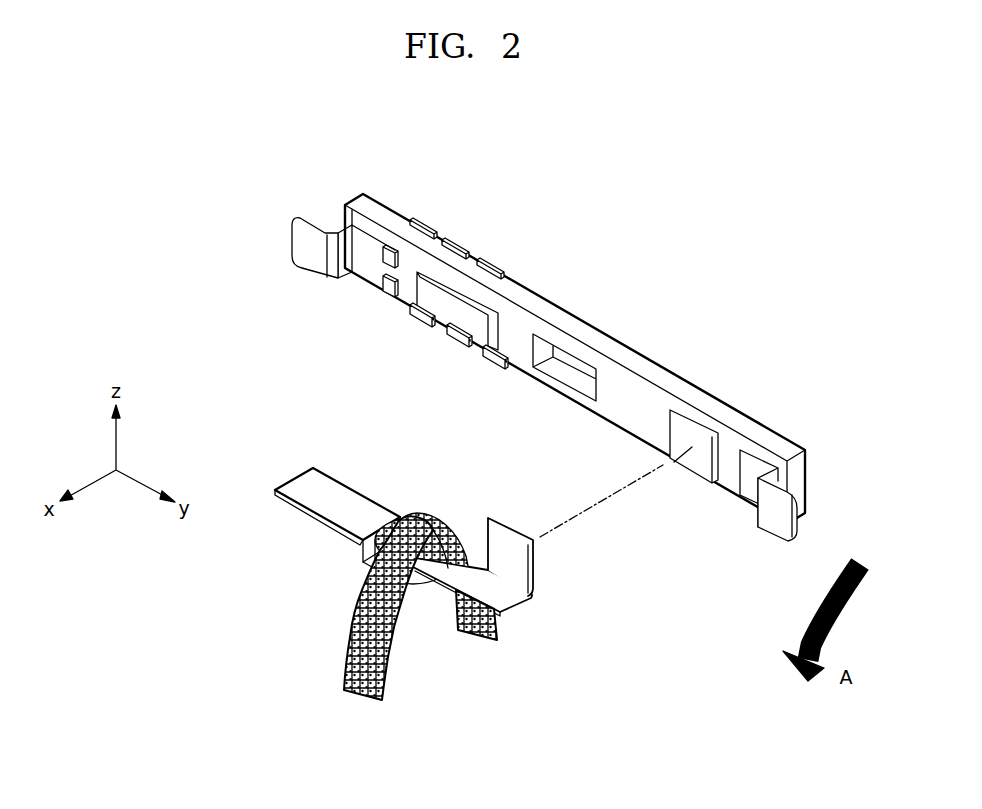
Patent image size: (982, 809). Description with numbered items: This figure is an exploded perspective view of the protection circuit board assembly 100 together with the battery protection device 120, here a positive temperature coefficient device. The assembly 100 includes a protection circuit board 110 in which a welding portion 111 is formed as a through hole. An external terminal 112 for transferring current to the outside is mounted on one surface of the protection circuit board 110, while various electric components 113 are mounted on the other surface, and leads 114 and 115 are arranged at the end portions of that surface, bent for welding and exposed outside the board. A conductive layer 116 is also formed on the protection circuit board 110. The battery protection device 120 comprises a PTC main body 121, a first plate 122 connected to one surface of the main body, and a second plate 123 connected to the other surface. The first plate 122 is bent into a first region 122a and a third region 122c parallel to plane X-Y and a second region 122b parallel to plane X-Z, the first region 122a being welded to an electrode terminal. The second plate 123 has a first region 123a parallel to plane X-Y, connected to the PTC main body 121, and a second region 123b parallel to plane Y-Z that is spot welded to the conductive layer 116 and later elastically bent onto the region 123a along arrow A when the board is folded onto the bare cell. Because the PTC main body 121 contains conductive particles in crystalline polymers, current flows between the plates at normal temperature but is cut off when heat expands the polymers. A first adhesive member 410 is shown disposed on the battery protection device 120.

The protection circuit board assembly 100 is at (553, 372).
The protection circuit board 110 is at (800, 461).
The welding portion 111 is at (556, 352).
The external terminal 112 is at (492, 258).
The electric components 113 is at (443, 310).
The lead 114 is at (313, 258).
The lead 115 is at (768, 525).
The conductive layer 116 is at (690, 432).
The battery protection device 120 is at (429, 536).
The PTC main body 121 is at (413, 535).
The first plate 122 is at (306, 561).
The 1a region 122a is at (323, 503).
The 1b region 122b is at (360, 553).
The 1c region 122c is at (344, 588).
The second plate 123 is at (534, 600).
The 2a region 123a is at (508, 600).
The 2b region 123b is at (522, 566).
The first adhesive member 410 is at (468, 620).